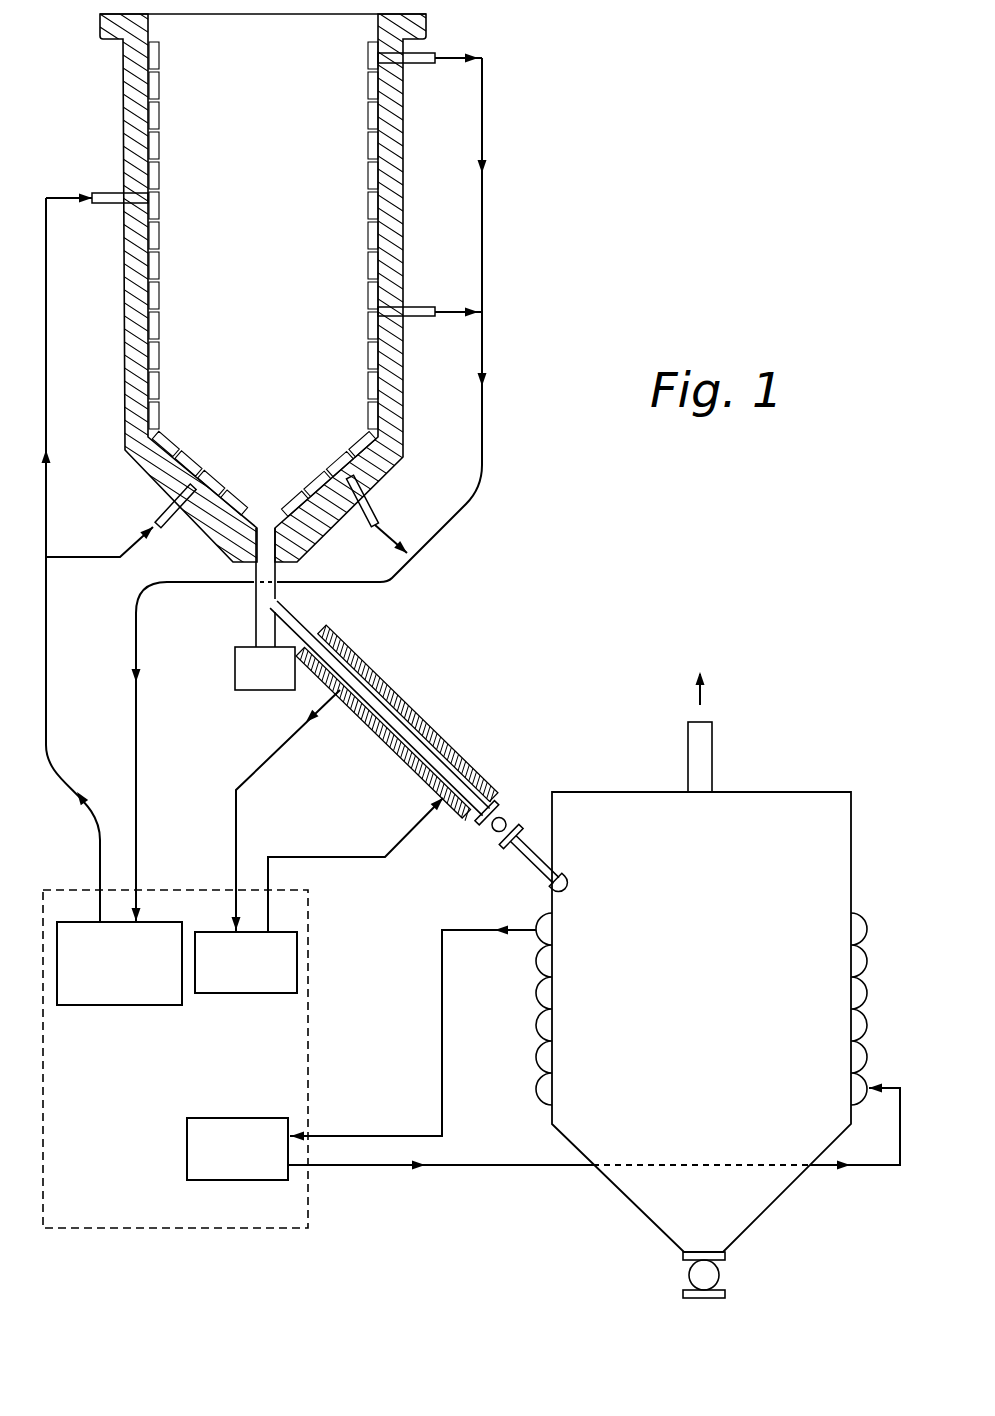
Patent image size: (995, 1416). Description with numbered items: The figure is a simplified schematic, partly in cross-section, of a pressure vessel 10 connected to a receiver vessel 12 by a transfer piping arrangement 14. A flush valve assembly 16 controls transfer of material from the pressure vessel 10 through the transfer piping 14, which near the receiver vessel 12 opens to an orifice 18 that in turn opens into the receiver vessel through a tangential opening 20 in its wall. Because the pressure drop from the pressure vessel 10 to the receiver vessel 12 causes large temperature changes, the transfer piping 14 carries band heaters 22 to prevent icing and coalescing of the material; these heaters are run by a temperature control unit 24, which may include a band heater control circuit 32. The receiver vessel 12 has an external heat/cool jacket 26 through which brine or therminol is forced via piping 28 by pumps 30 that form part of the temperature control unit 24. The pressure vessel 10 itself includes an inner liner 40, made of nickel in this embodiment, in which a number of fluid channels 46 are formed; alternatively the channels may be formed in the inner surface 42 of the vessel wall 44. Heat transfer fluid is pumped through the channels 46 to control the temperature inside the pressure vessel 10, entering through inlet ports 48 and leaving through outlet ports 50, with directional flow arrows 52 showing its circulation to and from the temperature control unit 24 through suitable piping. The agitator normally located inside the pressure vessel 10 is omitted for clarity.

The pressure vessel 10 is at (512, 183).
The receiver vessel 12 is at (788, 768).
The transfer piping arrangement 14 is at (304, 626).
The flush valve assembly 16 is at (246, 700).
The orifice 18 is at (494, 833).
The tangential opening 20 is at (577, 875).
The band heaters 22 is at (388, 676).
The temperature control unit 24 is at (244, 959).
The external heat/cool jacket 26 is at (532, 1063).
The piping 28 is at (507, 1167).
The pumps 30 is at (187, 1150).
The band heater control circuit 32 is at (248, 993).
The inner liner 40 is at (248, 386).
The inner surface 42 is at (158, 27).
The vessel wall 44 is at (137, 87).
The fluid channels 46 is at (163, 143).
The inlet ports 48 is at (110, 190).
The outlet ports 50 is at (428, 62).
The directional flow arrows 52 is at (48, 670).